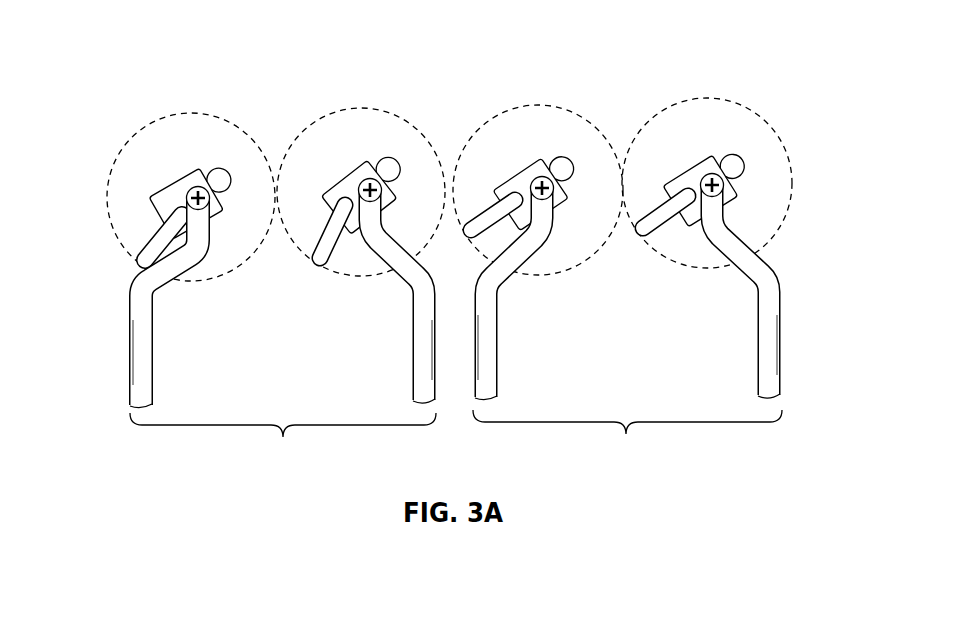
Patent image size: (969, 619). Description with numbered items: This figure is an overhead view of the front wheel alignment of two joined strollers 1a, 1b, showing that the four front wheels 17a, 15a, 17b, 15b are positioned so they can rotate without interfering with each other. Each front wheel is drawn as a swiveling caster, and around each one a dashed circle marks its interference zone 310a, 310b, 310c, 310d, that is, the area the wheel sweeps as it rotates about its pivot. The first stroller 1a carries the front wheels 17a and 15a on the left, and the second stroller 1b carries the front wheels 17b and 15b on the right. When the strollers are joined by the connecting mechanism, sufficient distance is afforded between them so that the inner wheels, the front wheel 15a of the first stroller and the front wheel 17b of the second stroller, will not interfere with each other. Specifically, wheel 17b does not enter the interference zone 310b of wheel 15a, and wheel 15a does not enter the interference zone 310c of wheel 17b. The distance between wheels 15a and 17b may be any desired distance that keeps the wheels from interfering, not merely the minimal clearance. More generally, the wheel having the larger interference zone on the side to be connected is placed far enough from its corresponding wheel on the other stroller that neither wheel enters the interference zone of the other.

The stroller 1a is at (130, 52).
The stroller 1b is at (785, 40).
The interference zone 310a is at (215, 110).
The interference zone 310b is at (385, 100).
The interference zone 310c is at (590, 108).
The interference zone 310d is at (760, 104).
The front wheel 17a is at (212, 168).
The front wheel 15a is at (382, 162).
The front wheel 17b is at (482, 190).
The front wheel 15b is at (733, 160).